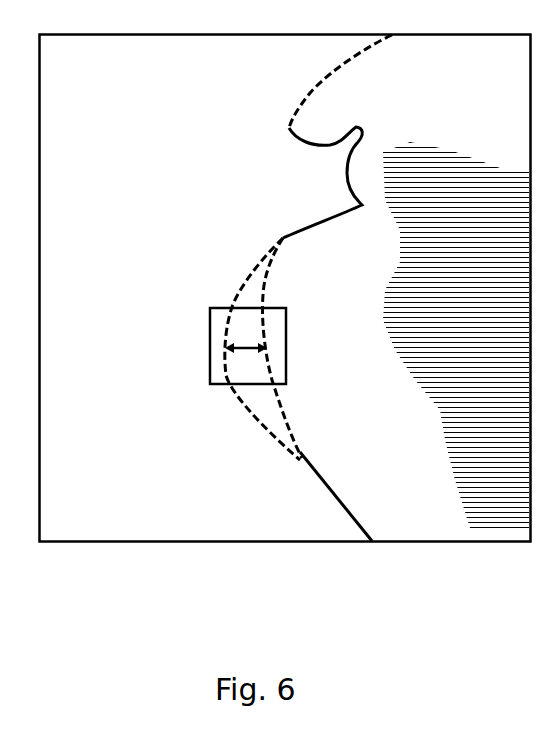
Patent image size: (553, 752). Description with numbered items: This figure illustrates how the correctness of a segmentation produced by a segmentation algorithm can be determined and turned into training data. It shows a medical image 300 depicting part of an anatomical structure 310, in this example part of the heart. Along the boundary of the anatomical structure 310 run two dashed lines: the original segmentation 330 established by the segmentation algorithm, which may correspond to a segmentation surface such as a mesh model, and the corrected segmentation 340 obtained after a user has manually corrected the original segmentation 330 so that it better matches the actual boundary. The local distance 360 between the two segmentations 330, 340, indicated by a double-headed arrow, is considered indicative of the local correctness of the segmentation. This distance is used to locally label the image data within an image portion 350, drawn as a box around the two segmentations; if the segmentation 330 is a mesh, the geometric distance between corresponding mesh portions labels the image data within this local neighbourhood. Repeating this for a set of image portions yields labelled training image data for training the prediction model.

The medical image 300 is at (483, 545).
The anatomical structure 310 is at (457, 502).
The segmentation 330 is at (270, 420).
The corrected segmentation 340 is at (287, 423).
The image portion 350 is at (222, 306).
The local distance 360 is at (246, 352).